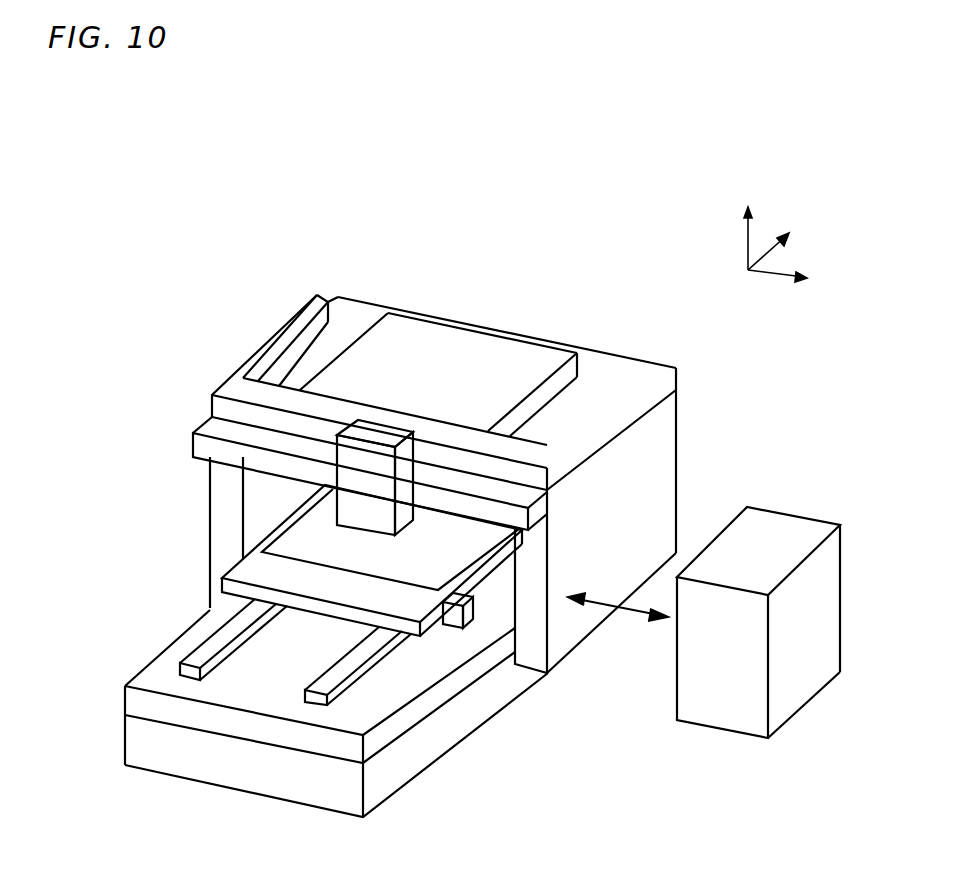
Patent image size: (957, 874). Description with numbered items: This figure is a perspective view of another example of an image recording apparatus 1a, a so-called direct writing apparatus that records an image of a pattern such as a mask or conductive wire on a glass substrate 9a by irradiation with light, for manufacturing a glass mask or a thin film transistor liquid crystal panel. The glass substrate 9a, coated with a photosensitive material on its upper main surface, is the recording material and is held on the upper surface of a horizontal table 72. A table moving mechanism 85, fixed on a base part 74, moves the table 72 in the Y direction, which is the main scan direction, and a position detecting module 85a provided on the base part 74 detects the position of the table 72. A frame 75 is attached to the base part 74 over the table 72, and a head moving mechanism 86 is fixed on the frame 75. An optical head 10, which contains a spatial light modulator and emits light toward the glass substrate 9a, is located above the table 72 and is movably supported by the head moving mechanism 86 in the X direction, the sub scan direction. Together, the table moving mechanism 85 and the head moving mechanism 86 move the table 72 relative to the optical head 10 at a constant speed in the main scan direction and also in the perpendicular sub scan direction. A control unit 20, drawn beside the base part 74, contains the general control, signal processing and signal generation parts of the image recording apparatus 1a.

The image recording apparatus 1a is at (197, 181).
The optical head 10 is at (363, 433).
The head moving mechanism 86 is at (214, 412).
The glass substrate 9a is at (285, 550).
The table 72 is at (230, 576).
The table moving mechanism 85 is at (195, 657).
The position detecting module 85a is at (480, 605).
The base part 74 is at (468, 705).
The frame 75 is at (636, 368).
The control unit 20 is at (778, 530).